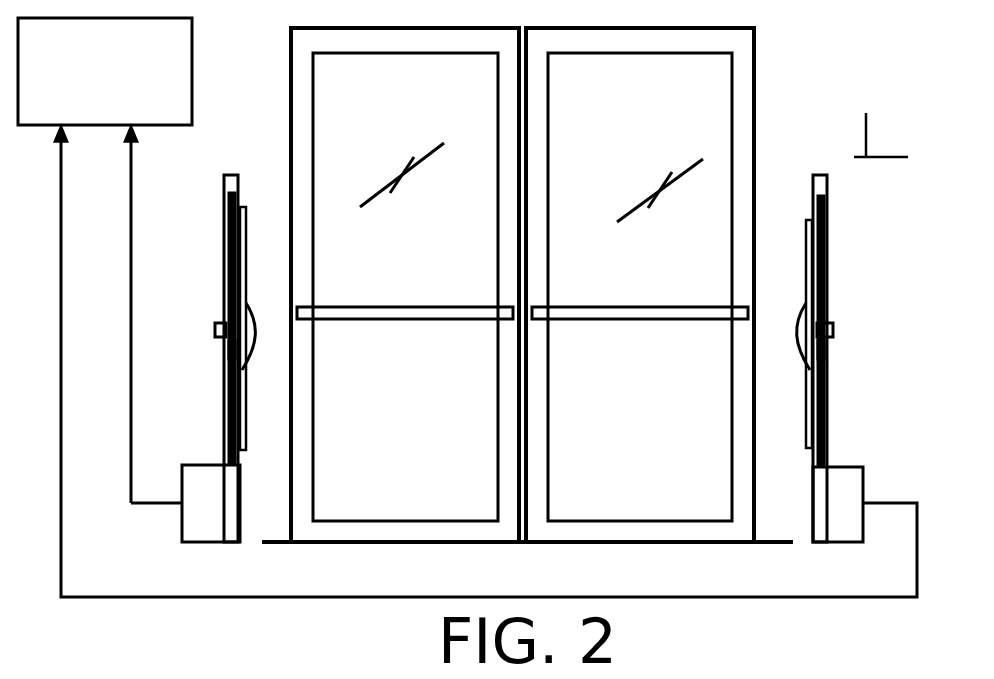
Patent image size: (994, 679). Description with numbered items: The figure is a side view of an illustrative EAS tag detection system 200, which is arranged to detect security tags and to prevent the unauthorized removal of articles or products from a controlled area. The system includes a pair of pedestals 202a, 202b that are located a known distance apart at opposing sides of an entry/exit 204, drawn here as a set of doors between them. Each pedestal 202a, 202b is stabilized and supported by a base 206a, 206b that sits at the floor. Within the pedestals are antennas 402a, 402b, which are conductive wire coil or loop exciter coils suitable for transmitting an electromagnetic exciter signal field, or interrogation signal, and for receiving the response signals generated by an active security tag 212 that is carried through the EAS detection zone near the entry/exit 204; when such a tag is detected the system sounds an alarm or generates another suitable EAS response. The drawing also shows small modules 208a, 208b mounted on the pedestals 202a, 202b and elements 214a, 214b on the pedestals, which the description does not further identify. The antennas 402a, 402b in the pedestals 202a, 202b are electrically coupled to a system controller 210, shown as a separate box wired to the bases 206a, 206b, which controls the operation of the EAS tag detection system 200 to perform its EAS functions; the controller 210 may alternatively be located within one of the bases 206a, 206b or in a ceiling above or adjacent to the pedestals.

The EAS tag detection system 200 is at (832, 60).
The entry/exit 204 is at (755, 127).
The system controller 210 is at (200, 331).
The active security tag 212 is at (930, 331).
The pedestal 202a is at (228, 318).
The pedestal 202b is at (826, 320).
The antenna 402a is at (240, 320).
The antenna 402b is at (814, 300).
The first sensor module 208a is at (215, 335).
The second sensor module 208b is at (833, 335).
The first transceiver 214a is at (234, 352).
The second transceiver 214b is at (822, 368).
The base 206a is at (204, 465).
The base 206b is at (848, 467).